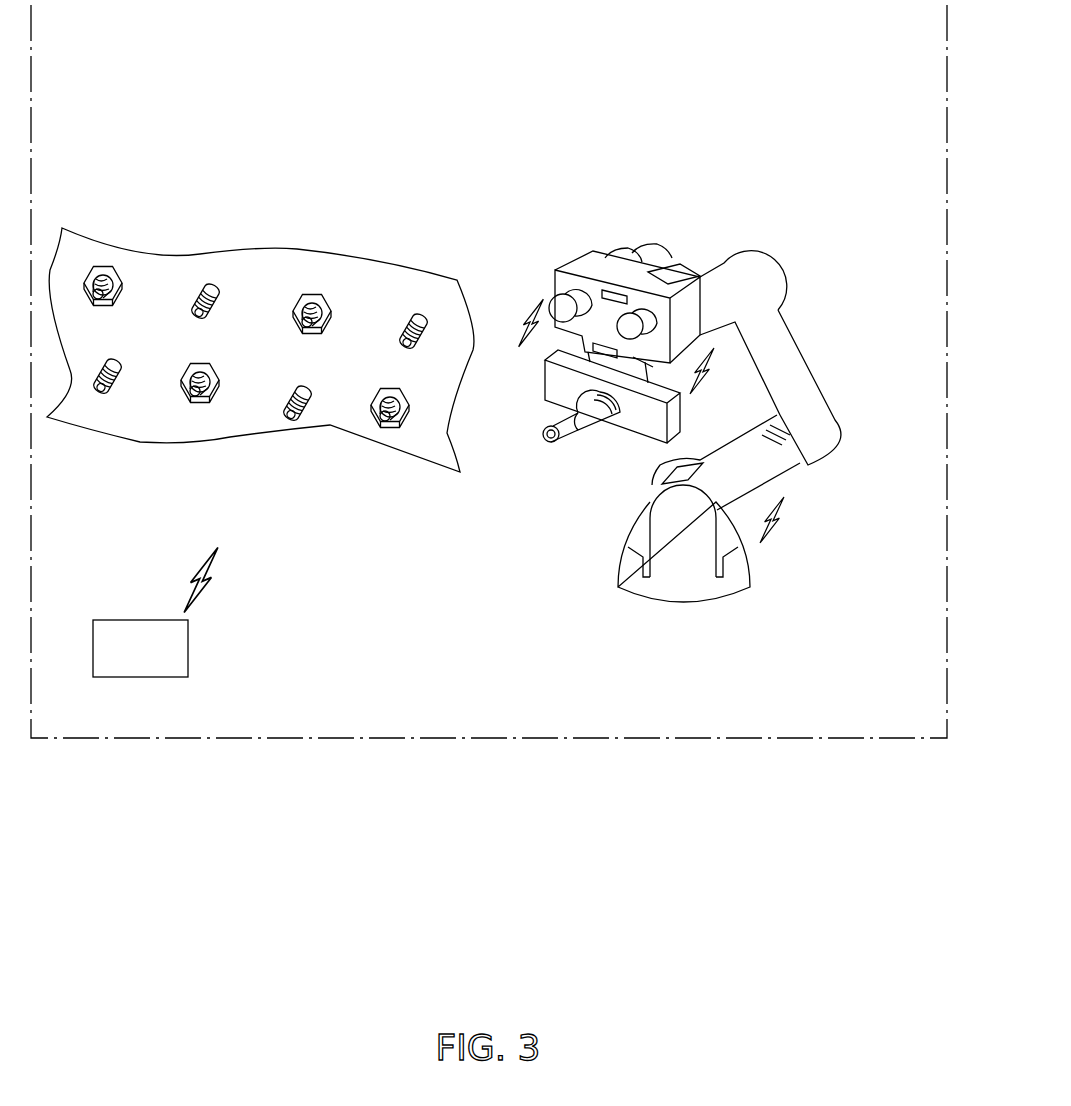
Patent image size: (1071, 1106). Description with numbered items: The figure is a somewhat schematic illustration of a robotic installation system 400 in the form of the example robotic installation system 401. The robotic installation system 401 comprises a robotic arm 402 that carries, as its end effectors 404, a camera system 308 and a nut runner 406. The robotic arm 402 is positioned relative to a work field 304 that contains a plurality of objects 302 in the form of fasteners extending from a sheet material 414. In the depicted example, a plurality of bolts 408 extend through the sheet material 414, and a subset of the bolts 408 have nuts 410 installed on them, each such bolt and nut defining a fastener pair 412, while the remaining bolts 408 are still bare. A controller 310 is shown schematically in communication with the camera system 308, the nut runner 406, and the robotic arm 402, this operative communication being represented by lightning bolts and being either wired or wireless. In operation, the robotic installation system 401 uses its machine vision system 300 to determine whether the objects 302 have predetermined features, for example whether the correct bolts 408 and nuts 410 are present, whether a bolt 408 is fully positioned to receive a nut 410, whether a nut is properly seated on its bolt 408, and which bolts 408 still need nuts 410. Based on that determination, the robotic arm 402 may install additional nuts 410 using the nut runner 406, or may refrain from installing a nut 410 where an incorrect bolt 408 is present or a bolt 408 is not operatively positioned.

The machine vision system 300 is at (805, 170).
The objects 302 is at (237, 173).
The work field 304 is at (377, 180).
The camera system 308 is at (593, 260).
The controller 310 is at (161, 662).
The robotic installation system 400 is at (830, 72).
The robotic installation system 401 is at (758, 83).
The robotic arm 402 is at (770, 253).
The end effectors 404 is at (641, 250).
The nut runner 406 is at (620, 430).
The bolts 408 is at (199, 294).
The nuts 410 is at (115, 272).
The fastener pair 412 is at (96, 262).
The sheet material 414 is at (325, 425).